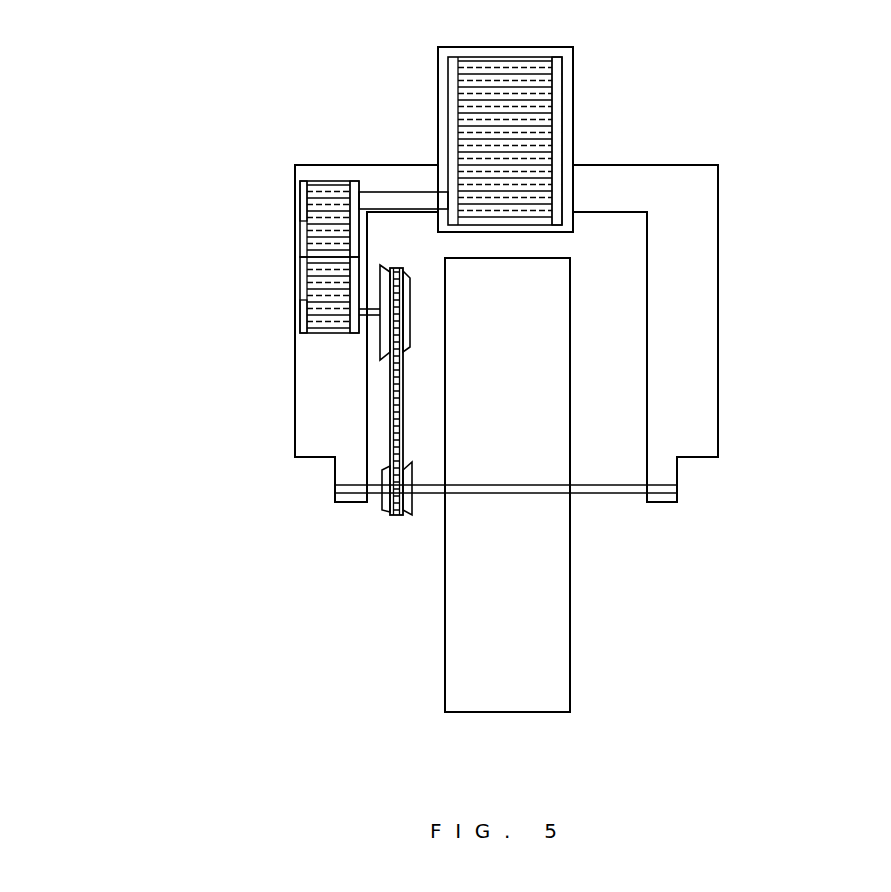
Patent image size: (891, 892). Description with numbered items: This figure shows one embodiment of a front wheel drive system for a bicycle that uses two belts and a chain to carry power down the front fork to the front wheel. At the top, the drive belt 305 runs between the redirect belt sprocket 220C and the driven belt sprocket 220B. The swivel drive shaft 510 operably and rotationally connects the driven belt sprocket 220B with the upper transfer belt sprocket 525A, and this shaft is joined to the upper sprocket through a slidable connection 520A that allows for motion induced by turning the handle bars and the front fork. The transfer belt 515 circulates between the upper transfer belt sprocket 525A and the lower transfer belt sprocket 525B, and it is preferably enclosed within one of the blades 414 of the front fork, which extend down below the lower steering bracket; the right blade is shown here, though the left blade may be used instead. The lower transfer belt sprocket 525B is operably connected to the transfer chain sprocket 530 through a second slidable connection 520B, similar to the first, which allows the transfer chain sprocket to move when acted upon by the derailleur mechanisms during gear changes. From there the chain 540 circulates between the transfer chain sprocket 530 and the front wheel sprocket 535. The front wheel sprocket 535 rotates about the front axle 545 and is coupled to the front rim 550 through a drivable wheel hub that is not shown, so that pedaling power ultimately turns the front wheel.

The driven belt sprocket 220B is at (563, 190).
The redirect belt sprocket 220C is at (560, 82).
The drive belt 305 is at (460, 122).
The blade 414 is at (705, 250).
The swivel drive shaft 510 is at (392, 195).
The transfer belt 515 is at (348, 252).
The slidable connection 520A is at (300, 215).
The slidable connection 520B is at (300, 306).
The upper transfer belt sprocket 525A is at (300, 186).
The lower transfer belt sprocket 525B is at (300, 327).
The transfer chain sprocket 530 is at (380, 342).
The front wheel sprocket 535 is at (382, 510).
The chain 540 is at (392, 410).
The front axle 545 is at (677, 490).
The front rim 550 is at (570, 622).